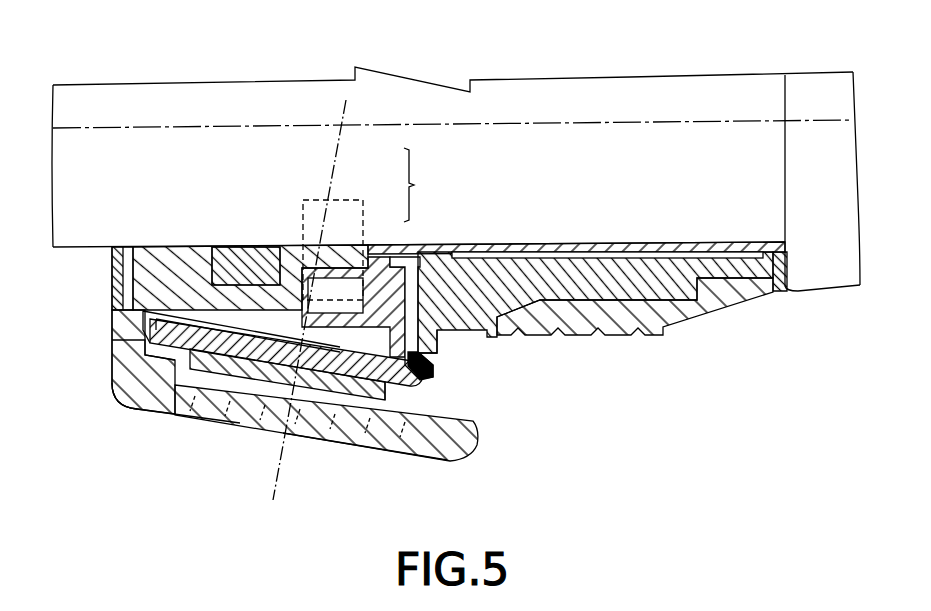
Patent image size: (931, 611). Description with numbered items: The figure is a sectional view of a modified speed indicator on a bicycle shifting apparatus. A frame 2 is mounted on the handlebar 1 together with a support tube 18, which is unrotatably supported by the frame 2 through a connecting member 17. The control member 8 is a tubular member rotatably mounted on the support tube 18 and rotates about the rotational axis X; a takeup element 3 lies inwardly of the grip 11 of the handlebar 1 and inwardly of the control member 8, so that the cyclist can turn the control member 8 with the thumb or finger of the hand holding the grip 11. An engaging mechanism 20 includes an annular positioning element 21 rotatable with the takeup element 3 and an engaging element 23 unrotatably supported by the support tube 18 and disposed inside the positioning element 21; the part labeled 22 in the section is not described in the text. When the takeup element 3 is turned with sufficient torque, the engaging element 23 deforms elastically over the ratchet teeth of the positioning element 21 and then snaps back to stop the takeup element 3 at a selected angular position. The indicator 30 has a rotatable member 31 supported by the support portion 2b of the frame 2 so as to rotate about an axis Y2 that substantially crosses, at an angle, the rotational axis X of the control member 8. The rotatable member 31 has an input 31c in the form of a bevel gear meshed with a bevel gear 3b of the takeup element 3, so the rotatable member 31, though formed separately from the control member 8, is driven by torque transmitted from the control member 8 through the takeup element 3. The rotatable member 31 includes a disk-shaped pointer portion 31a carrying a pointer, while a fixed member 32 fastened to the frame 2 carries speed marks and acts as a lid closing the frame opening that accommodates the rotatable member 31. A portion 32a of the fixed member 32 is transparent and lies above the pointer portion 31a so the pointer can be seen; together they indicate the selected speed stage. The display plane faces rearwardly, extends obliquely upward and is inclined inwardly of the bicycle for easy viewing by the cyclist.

The handlebar 1 is at (146, 96).
The frame 2 is at (155, 257).
The support portion 2b is at (118, 368).
The takeup element 3 is at (453, 262).
The bevel gear 3b is at (439, 354).
The control member 8 is at (658, 334).
The grip 11 is at (805, 280).
The connecting member 17 is at (226, 247).
The support tube 18 is at (631, 248).
The engaging mechanism 20 is at (426, 185).
The positioning element 21 is at (376, 258).
The contact holder 22 is at (318, 251).
The engaging element 23 is at (334, 288).
The indicator 30 is at (146, 442).
The rotatable member 31 is at (441, 438).
The pointer portion 31a is at (238, 416).
The input 31c is at (328, 389).
The fixed member 32 is at (473, 440).
The transparent portion 32a is at (388, 444).
The rotational axis X is at (597, 123).
The axis Y2 is at (309, 305).